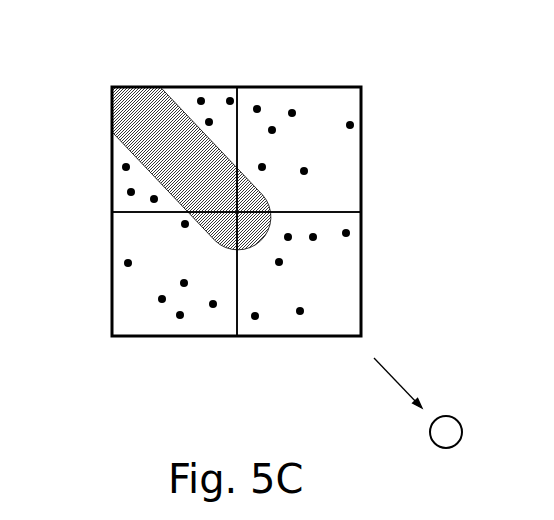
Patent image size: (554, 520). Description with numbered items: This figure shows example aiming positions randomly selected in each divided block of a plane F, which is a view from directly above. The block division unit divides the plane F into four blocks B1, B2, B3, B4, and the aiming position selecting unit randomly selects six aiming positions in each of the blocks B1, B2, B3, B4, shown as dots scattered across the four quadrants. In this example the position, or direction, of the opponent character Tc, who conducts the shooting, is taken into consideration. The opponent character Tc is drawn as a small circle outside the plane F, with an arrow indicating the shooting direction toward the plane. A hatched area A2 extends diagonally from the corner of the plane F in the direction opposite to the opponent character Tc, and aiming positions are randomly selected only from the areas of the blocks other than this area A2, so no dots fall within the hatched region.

The plane F is at (328, 87).
The block B1 is at (121, 170).
The block B2 is at (121, 292).
The block B3 is at (353, 158).
The block B4 is at (353, 265).
The area A2 is at (268, 190).
The opponent character Tc is at (457, 425).